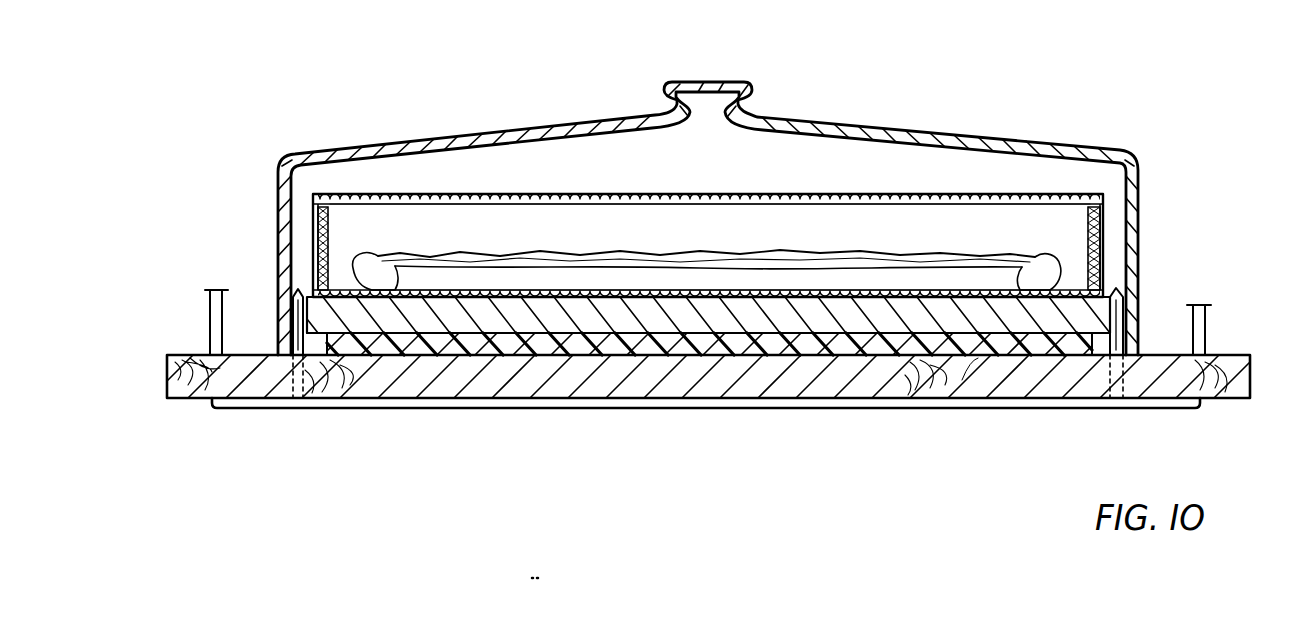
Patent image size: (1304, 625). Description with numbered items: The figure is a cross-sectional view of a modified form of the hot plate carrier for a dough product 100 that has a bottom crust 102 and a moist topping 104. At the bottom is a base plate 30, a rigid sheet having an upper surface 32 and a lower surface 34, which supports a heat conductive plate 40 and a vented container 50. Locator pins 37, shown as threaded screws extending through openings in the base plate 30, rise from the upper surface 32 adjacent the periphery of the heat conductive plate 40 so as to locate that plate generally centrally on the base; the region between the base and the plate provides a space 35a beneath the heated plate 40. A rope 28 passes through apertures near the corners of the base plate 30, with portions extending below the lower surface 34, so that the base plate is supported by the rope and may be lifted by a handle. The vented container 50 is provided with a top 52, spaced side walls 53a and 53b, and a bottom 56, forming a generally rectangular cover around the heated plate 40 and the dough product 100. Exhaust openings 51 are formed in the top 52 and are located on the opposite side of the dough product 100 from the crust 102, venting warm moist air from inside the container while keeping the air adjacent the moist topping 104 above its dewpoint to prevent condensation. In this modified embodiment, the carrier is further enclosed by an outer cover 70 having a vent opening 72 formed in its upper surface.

The rope 28 is at (212, 318).
The base plate 30 is at (158, 370).
The upper surface 32 is at (543, 353).
The lower surface 34 is at (367, 400).
The recess 35a is at (977, 360).
The locator pins 37 is at (295, 297).
The heat conductive plate 40 is at (917, 316).
The vented container 50 is at (794, 189).
The exhaust openings 51 is at (393, 195).
The top 52 is at (887, 204).
The side wall 53a is at (1103, 247).
The side wall 53b is at (317, 242).
The bottom 56 is at (562, 292).
The outer cover 70 is at (852, 121).
The vent opening 72 is at (707, 86).
The dough product 100 is at (1052, 272).
The bottom crust 102 is at (755, 297).
The moist topping 104 is at (1004, 235).